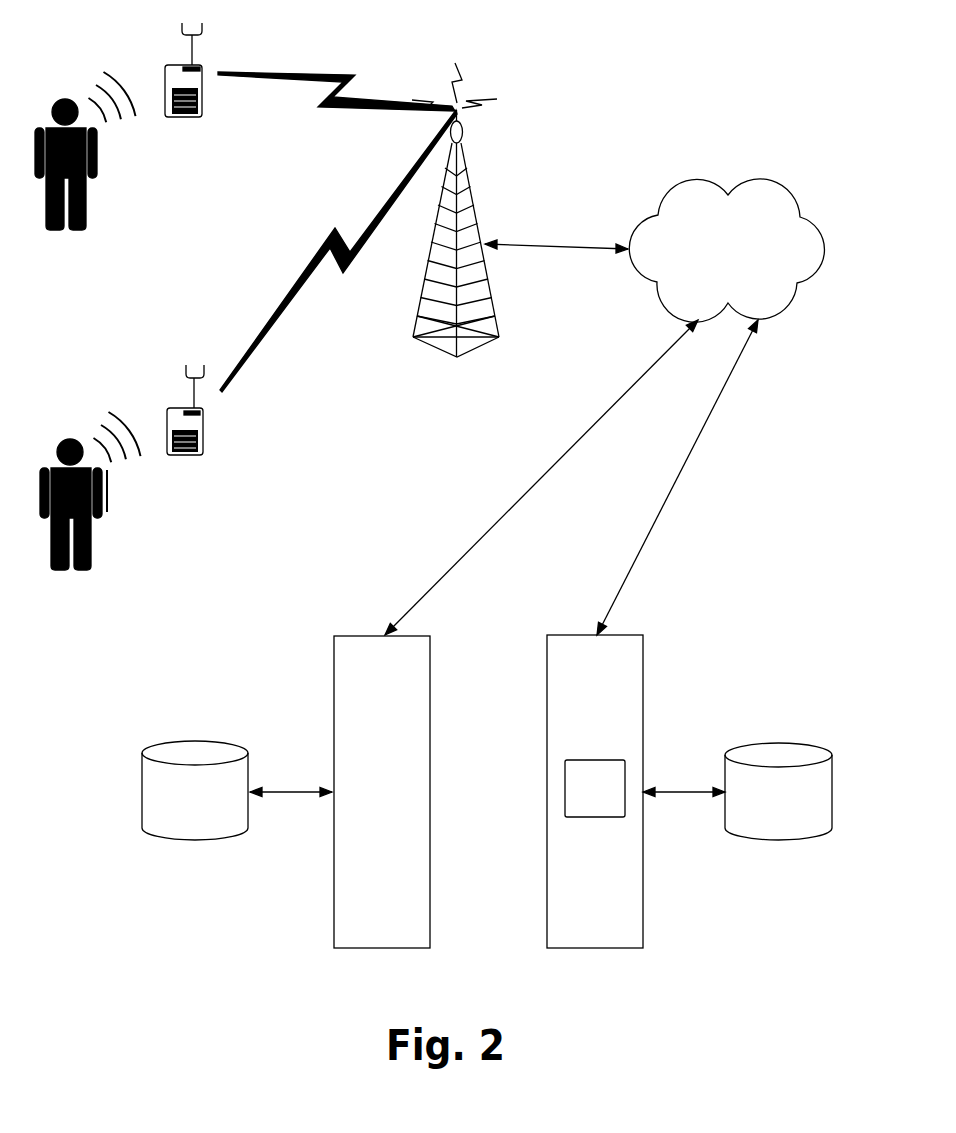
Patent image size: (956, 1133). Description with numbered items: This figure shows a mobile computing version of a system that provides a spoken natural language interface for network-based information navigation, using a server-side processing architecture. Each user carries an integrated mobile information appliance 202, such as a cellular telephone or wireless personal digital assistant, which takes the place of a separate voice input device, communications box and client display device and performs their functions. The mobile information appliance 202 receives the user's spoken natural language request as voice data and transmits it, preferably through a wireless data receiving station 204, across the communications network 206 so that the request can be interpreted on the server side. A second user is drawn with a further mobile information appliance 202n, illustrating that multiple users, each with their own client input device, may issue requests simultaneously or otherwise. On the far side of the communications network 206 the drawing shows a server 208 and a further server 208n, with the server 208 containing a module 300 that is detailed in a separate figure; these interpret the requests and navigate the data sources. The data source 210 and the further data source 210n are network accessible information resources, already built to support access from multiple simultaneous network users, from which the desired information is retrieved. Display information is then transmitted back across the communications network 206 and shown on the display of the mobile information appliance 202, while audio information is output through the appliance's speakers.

The mobile information appliance 202 is at (207, 490).
The mobile information appliance 202n is at (208, 150).
The wireless data receiving station 204 is at (482, 397).
The communications network 206 is at (747, 281).
The server 208 is at (695, 652).
The server (nth) 208n is at (498, 845).
The data source 210 is at (840, 738).
The data source 210n is at (137, 810).
The activity tracking module (see Fig. 3) 300 is at (622, 760).